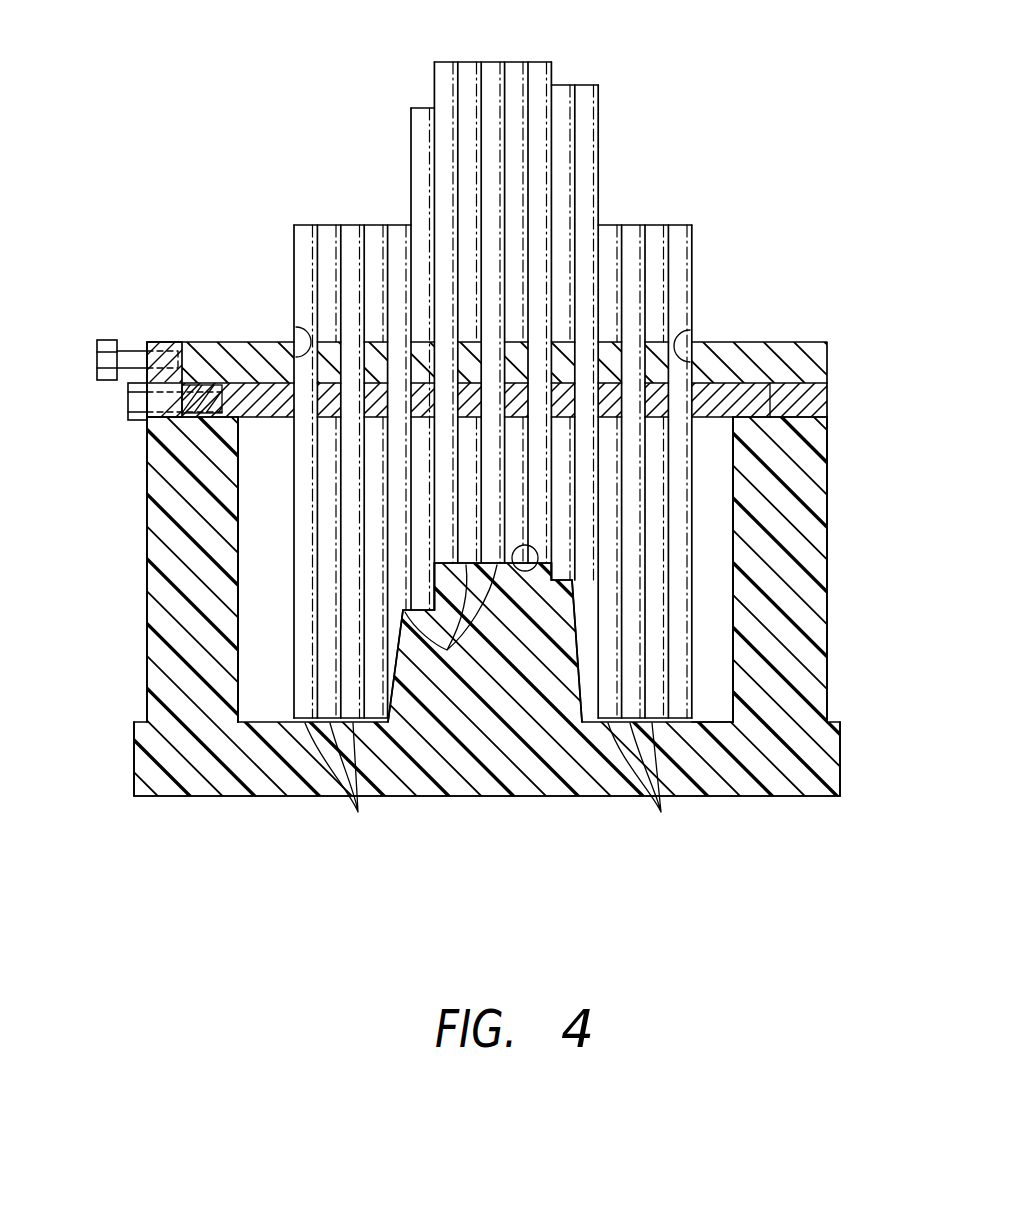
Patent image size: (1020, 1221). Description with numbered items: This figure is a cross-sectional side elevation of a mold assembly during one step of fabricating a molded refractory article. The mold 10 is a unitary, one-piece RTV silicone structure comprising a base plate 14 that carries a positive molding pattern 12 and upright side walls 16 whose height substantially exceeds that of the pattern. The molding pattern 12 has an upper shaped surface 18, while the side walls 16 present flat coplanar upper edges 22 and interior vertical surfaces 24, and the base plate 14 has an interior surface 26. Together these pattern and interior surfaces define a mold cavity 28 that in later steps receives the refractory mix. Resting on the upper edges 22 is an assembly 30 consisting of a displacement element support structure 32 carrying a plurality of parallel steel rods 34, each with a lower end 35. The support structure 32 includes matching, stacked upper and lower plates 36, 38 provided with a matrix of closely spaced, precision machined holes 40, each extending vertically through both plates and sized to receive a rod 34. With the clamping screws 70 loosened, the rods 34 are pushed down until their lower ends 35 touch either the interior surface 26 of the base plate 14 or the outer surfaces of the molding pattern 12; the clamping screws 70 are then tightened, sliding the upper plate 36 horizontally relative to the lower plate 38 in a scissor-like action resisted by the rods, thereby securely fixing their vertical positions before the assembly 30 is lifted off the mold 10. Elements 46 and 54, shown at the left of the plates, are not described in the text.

The mold 10 is at (850, 476).
The molding pattern 12 is at (498, 710).
The base plate 14 is at (813, 797).
The side walls 16 is at (160, 575).
The upper shaped surface 18 is at (521, 572).
The upper edges 22 is at (770, 412).
The interior vertical surfaces 24 is at (240, 595).
The interior surface 26 is at (700, 722).
The mold cavity 28 is at (250, 517).
The assembly 30 is at (706, 195).
The displacement element support structure 32 is at (846, 340).
The rods 34 is at (332, 232).
The lower end 35 is at (493, 704).
The upper plate 36 is at (200, 342).
The lower plate 38 is at (276, 418).
The holes 40 is at (292, 328).
The clamp bracket 46 is at (166, 342).
The lower bolt 54 is at (128, 402).
The clamping screws 70 is at (97, 360).